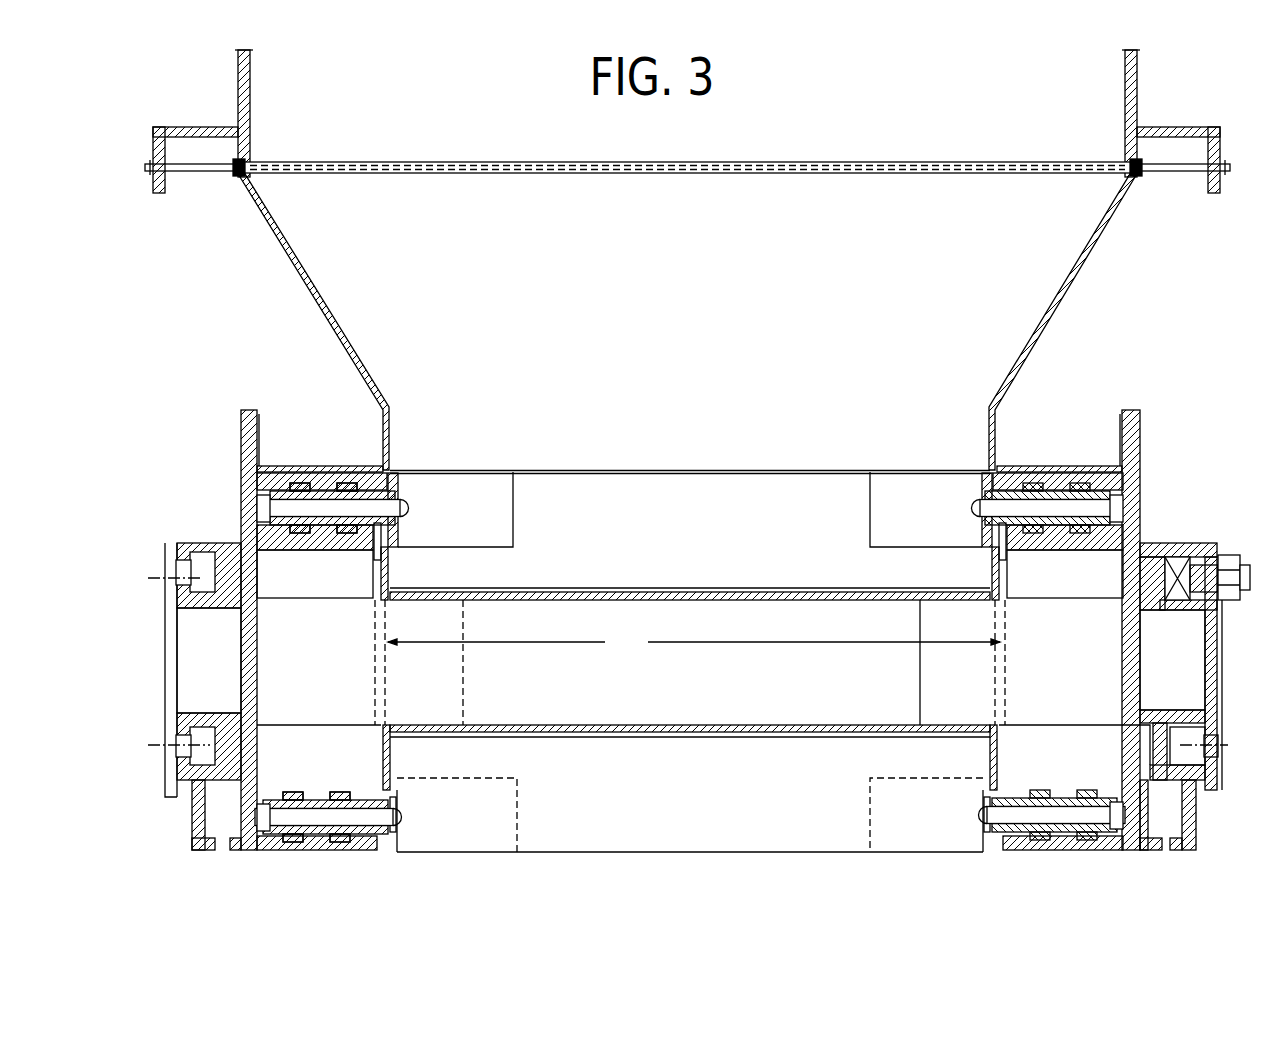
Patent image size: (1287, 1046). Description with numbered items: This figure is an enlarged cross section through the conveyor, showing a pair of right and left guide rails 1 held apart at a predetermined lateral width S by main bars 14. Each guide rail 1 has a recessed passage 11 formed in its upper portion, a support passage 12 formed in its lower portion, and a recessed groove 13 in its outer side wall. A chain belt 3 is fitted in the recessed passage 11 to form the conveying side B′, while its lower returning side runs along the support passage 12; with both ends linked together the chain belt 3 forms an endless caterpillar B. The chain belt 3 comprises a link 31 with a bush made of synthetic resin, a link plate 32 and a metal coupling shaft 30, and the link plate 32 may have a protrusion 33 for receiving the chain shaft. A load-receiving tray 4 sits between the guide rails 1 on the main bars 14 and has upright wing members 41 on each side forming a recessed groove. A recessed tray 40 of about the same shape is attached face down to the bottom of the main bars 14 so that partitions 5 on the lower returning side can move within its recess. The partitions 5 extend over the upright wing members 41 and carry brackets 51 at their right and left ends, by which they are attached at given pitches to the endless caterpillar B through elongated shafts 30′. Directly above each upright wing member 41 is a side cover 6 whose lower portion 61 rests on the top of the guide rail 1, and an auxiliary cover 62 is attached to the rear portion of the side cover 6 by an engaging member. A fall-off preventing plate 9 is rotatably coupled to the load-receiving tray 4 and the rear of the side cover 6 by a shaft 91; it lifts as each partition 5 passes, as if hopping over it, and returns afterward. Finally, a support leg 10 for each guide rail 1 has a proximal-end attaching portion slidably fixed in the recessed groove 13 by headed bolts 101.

The guide rail 1 is at (240, 478).
The chain belt 3 is at (315, 490).
The load-receiving tray 4 is at (572, 590).
The partition 5 is at (601, 490).
The side cover 6 is at (316, 305).
The fall-off preventing plate 9 is at (487, 240).
The support leg 10 is at (170, 668).
The headed bolt 101 is at (1178, 555).
The recessed passage 11 is at (318, 550).
The support passage 12 is at (325, 847).
The recessed groove 13 is at (190, 578).
The main bar 14 is at (300, 705).
The metal coupling shaft 30 is at (388, 825).
The elongated shaft 30′ is at (412, 500).
The link with bush 31 is at (337, 485).
The link plate 32 is at (360, 485).
The protrusion 33 is at (241, 494).
The recessed tray 40 is at (575, 740).
The upright wing member 41 is at (380, 574).
The bracket 51 is at (392, 497).
The lower portion 61 is at (290, 468).
The auxiliary cover 62 is at (250, 72).
The shaft 91 is at (238, 163).
The endless caterpillar B is at (305, 490).
The conveying side B′ is at (325, 490).
The lateral width S is at (694, 643).